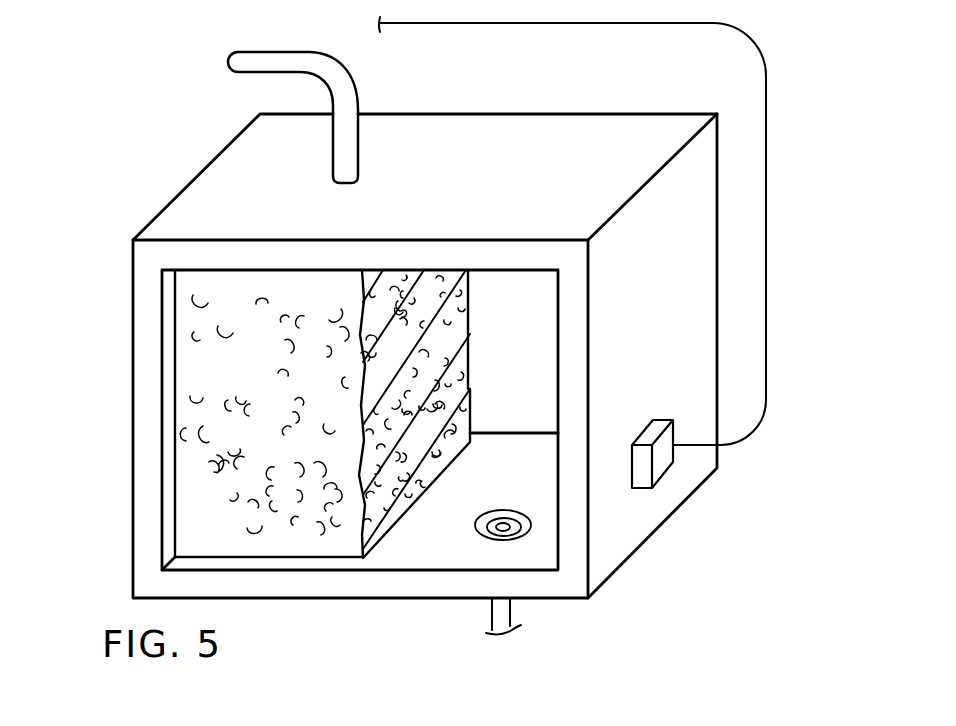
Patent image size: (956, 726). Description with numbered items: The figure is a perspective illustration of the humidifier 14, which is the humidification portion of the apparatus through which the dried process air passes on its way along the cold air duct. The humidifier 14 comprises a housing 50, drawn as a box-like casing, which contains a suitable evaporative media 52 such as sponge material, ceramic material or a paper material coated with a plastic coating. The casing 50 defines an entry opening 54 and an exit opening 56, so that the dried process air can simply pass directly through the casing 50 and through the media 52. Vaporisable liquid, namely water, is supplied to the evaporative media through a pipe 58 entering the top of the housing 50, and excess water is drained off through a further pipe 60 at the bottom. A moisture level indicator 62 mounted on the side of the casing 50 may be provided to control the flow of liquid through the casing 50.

The humidifier 14 is at (152, 161).
The housing 50 is at (499, 137).
The evaporative media 52 is at (285, 452).
The entry opening 54 is at (420, 572).
The exit opening 56 is at (522, 433).
The pipe 58 is at (281, 52).
The pipe 60 is at (512, 608).
The moisture level indicator 62 is at (662, 465).